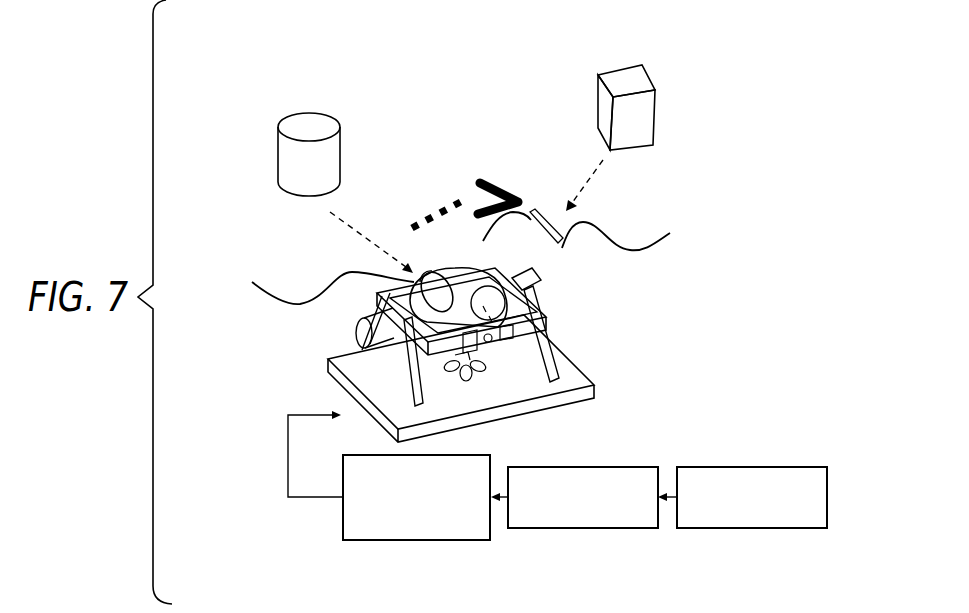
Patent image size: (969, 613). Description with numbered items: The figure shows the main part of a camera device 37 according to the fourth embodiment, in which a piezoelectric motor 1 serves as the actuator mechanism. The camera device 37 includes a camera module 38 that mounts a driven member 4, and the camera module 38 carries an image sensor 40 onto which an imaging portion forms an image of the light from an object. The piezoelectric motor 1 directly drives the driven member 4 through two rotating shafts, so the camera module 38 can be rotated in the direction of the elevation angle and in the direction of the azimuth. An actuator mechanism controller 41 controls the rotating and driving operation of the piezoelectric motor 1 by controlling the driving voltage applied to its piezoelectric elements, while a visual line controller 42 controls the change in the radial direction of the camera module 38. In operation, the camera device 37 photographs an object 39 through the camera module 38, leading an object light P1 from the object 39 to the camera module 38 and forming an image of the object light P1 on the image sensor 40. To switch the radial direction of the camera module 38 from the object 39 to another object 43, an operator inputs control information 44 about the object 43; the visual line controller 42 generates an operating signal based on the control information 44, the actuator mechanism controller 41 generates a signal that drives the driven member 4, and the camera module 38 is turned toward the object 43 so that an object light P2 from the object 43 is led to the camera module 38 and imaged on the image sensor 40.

The piezoelectric motor 1 is at (522, 354).
The driven member 4 is at (500, 242).
The camera device 37 is at (716, 142).
The camera module 38 is at (464, 256).
The object 39 is at (309, 122).
The image sensor 40 is at (540, 288).
The actuator mechanism controller 41 is at (410, 540).
The visual line controller 42 is at (580, 528).
The object 43 is at (621, 78).
The control information 44 is at (737, 528).
The object light P1 is at (339, 239).
The object light P2 is at (593, 180).